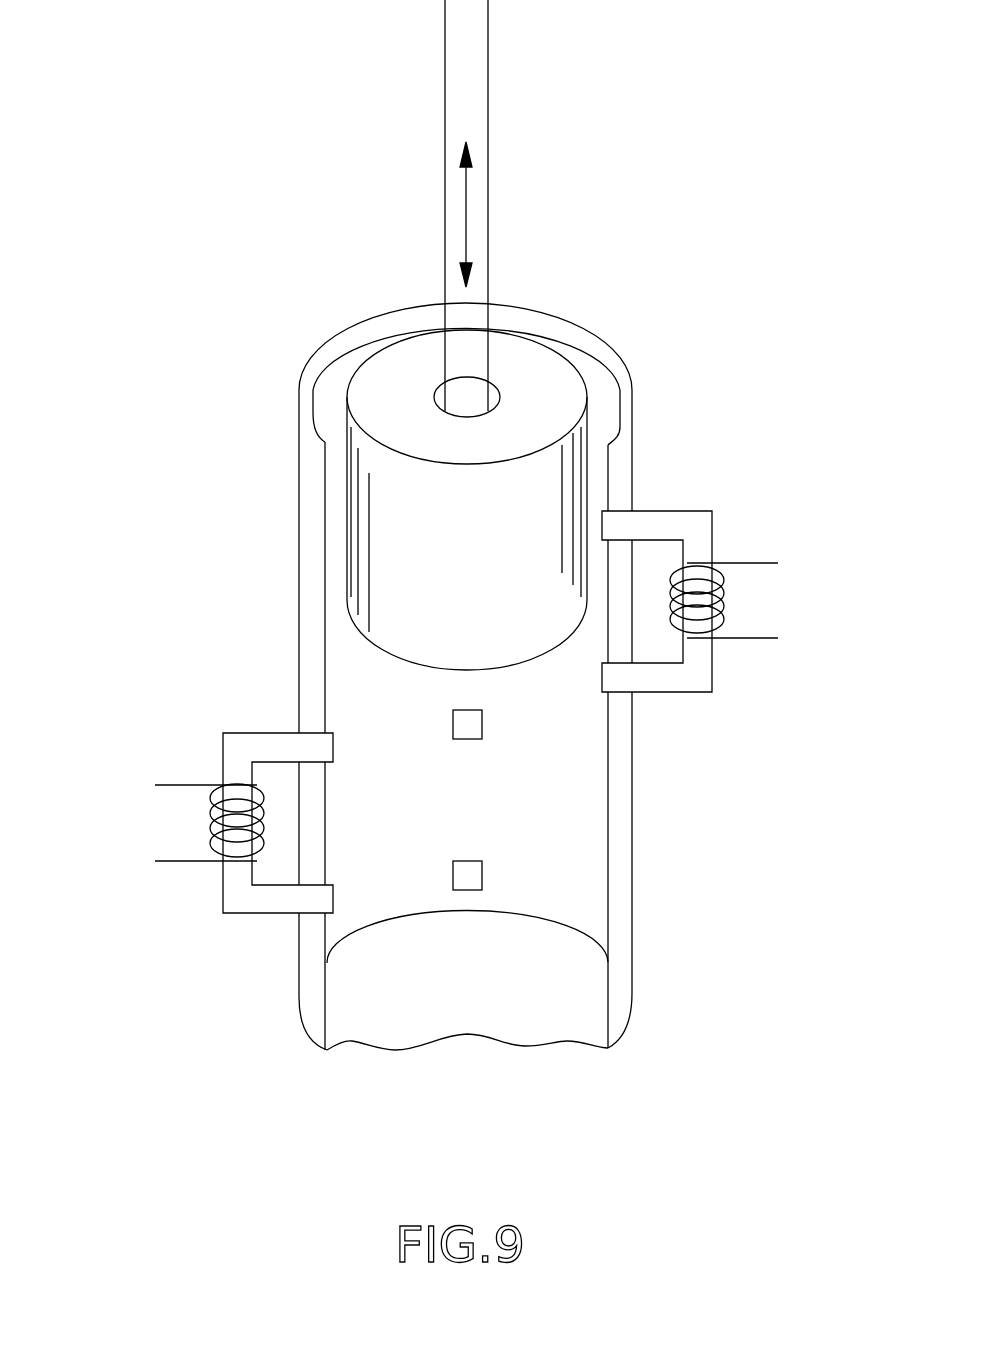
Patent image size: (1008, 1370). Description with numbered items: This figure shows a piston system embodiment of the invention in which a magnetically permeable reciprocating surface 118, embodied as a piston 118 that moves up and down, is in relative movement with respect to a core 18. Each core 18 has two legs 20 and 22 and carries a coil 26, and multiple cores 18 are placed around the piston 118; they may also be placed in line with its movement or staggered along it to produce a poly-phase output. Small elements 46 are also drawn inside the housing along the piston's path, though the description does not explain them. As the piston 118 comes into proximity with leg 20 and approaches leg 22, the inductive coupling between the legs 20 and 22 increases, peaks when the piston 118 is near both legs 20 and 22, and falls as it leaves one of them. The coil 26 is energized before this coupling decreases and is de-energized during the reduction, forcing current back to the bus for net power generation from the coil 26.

The magnetically permeable reciprocating surface 118 is at (542, 463).
The leg 20 is at (620, 517).
The core 18 is at (686, 510).
The leg 22 is at (622, 678).
The coil 26 is at (720, 610).
The position sensors 46 is at (465, 740).